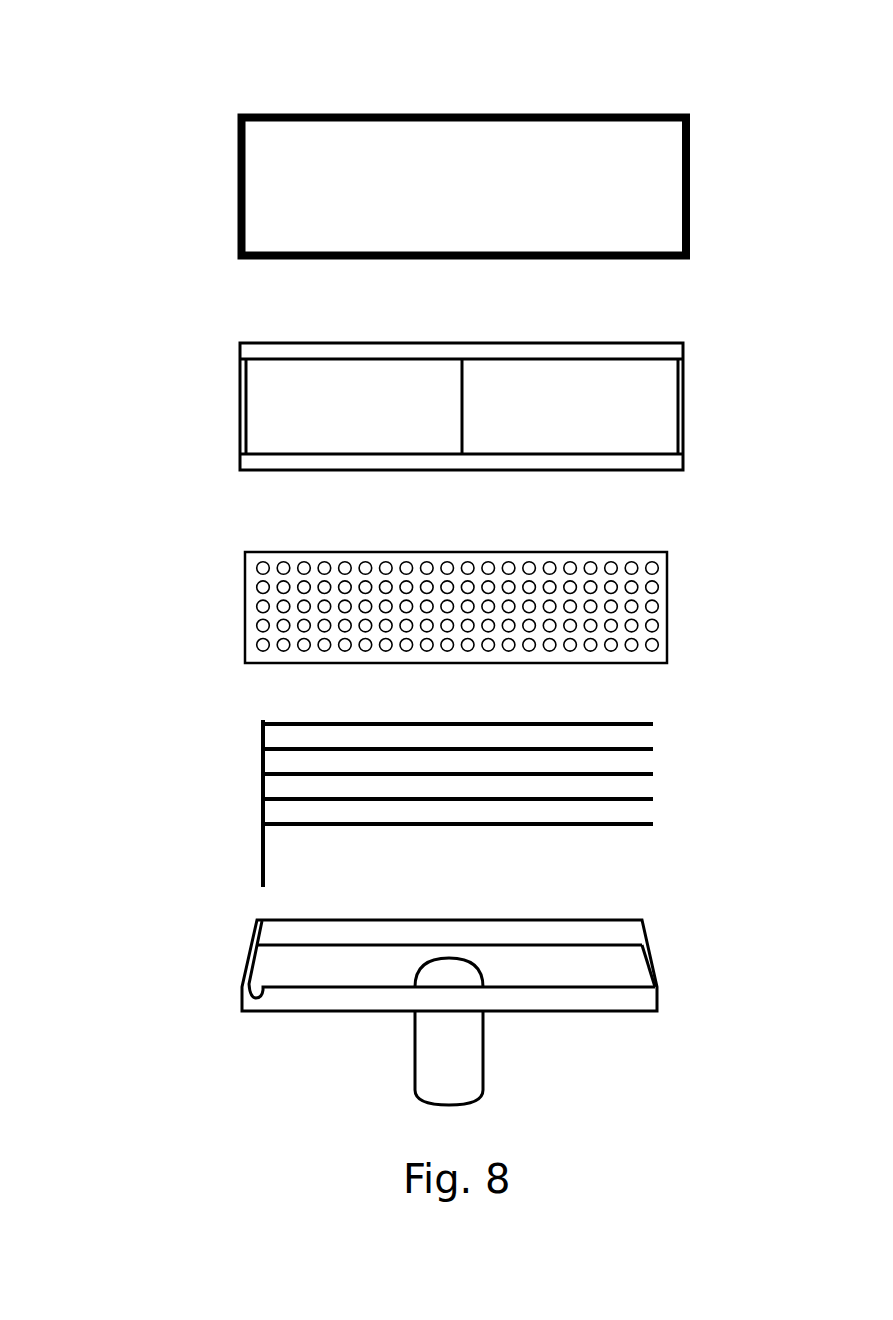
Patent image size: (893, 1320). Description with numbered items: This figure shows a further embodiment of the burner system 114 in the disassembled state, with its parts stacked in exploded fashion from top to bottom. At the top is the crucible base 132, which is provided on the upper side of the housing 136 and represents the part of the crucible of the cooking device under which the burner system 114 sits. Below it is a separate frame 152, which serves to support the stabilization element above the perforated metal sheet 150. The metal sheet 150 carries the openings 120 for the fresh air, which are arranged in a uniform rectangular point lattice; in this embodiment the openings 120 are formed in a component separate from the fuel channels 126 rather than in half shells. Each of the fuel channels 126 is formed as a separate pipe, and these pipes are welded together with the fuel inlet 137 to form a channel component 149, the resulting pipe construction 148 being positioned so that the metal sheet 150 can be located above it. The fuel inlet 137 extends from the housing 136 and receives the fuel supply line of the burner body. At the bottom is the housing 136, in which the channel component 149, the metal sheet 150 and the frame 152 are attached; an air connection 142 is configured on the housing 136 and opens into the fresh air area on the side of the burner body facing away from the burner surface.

The burner system 114 is at (458, 144).
The crucible base 132 is at (653, 142).
The frame 152 is at (262, 352).
The perforated metal sheet 150 is at (494, 614).
The openings 120 is at (633, 651).
The channel component 149 is at (346, 794).
The fuel channels 126 is at (376, 767).
The pipe construction 148 is at (261, 724).
The fuel inlet 137 is at (202, 803).
The housing 136 is at (499, 1012).
The air connection 142 is at (470, 1063).